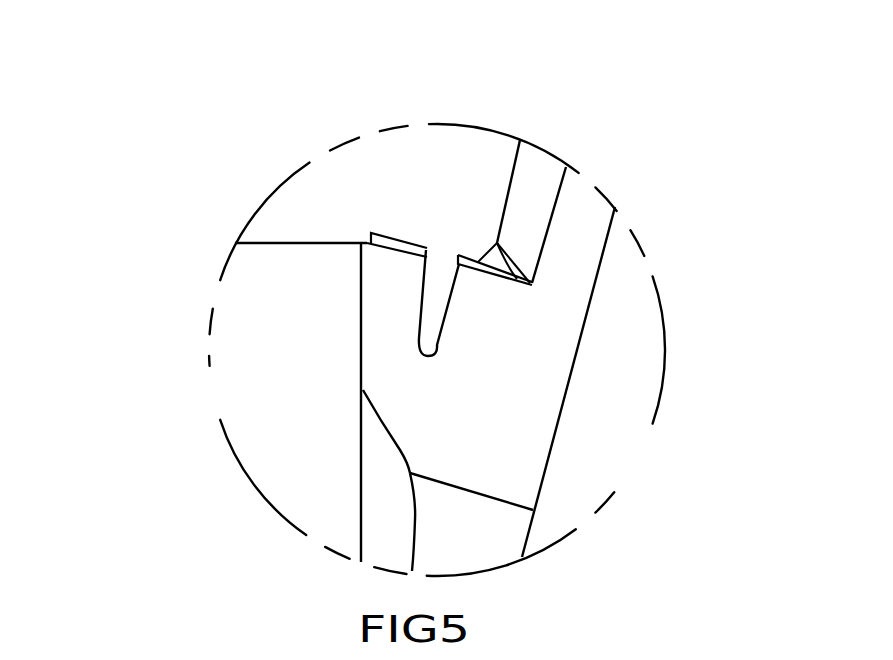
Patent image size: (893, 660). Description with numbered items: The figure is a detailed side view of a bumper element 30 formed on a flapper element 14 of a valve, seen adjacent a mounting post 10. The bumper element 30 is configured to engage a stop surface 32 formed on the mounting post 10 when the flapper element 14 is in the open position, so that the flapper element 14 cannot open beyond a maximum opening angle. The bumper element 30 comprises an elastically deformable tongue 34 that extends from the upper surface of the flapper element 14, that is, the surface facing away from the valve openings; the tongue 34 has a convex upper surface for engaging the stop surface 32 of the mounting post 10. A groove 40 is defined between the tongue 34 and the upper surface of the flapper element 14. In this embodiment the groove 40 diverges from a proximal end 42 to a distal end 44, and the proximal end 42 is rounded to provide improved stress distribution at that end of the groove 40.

The mounting post 10 is at (255, 315).
The flapper element 14 is at (598, 212).
The bumper element 30 is at (260, 541).
The stop surface 32 is at (363, 493).
The elastically deformable tongue 34 is at (380, 262).
The groove 40 is at (435, 287).
The proximal end 42 is at (420, 354).
The distal end 44 is at (427, 245).